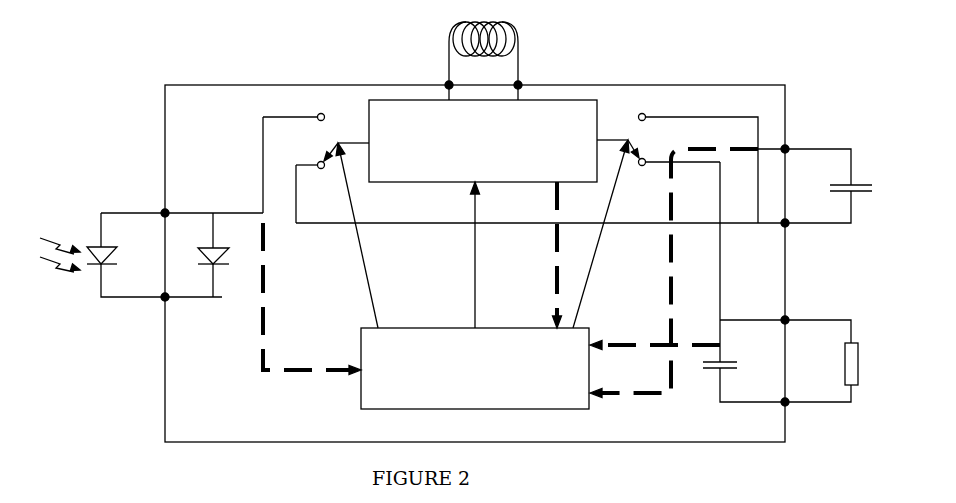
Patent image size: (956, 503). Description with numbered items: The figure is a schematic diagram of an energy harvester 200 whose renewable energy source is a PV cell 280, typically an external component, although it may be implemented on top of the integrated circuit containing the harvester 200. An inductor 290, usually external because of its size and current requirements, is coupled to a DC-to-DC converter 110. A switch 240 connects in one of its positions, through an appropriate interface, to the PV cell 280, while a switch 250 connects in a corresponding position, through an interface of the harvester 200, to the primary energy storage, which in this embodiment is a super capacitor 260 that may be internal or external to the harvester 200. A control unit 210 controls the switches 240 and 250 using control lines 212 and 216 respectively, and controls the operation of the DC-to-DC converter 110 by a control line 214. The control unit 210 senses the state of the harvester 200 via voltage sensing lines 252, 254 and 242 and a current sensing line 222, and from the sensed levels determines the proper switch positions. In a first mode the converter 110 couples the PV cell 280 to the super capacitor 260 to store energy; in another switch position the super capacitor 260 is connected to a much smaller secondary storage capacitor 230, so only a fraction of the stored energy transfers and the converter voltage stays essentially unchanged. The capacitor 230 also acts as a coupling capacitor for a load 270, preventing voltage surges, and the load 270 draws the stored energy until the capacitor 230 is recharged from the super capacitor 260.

The energy harvester 200 is at (220, 85).
The inductor 290 is at (447, 33).
The DC-to-DC converter 110 is at (425, 182).
The switch 240 is at (338, 138).
The switch 250 is at (615, 135).
The super capacitor 260 is at (853, 188).
The capacitor 230 is at (742, 366).
The load 270 is at (860, 357).
The PV cell 280 is at (119, 258).
The control unit 210 is at (378, 409).
The control line 212 is at (364, 272).
The control line 214 is at (473, 272).
The current sensing line 222 is at (555, 258).
The control line 216 is at (597, 250).
The voltage sensing line 252 is at (668, 272).
The voltage sensing line 254 is at (648, 338).
The voltage sensing line 242 is at (262, 334).